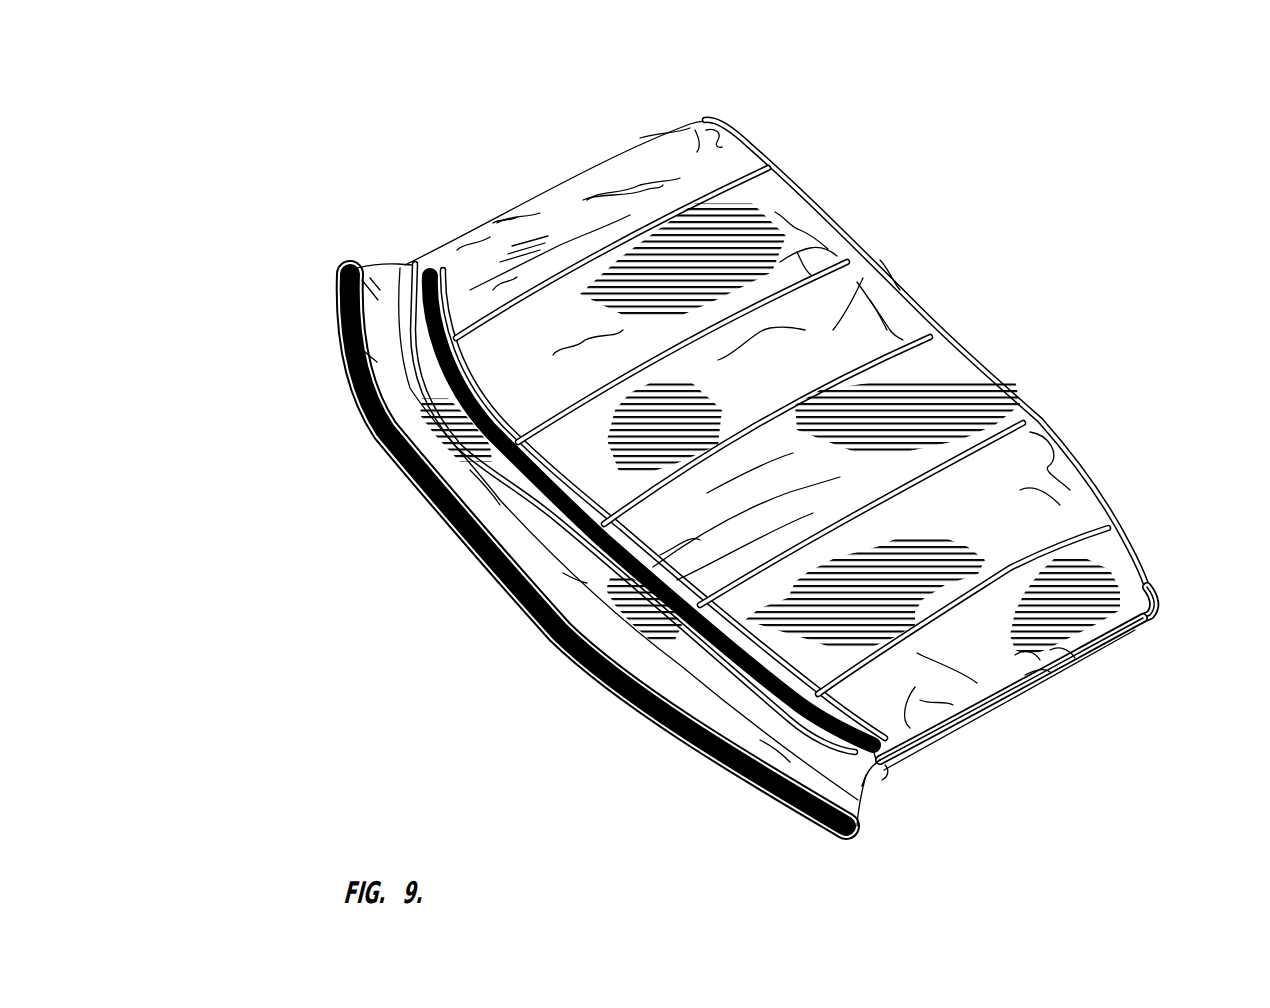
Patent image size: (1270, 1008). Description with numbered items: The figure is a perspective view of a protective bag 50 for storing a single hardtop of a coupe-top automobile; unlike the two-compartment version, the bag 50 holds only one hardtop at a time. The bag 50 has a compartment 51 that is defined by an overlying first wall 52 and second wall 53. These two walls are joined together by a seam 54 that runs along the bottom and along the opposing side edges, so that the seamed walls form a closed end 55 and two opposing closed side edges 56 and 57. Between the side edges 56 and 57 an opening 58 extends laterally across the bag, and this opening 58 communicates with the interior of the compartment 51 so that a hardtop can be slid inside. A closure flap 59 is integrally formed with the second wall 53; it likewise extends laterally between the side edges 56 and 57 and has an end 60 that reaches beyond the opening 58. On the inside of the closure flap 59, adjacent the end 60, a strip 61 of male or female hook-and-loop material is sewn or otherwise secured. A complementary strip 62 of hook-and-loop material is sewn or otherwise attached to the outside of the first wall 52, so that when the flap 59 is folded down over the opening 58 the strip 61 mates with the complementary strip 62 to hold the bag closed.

The protective bag 50 is at (1090, 238).
The compartment 51 is at (717, 168).
The first wall 52 is at (1074, 510).
The second wall 53 is at (1122, 630).
The seam 54 is at (1043, 668).
The closed end 55 is at (898, 286).
The closed side edge 56 is at (978, 716).
The closed side edge 57 is at (546, 194).
The opening 58 is at (520, 486).
The closure flap 59 is at (378, 298).
The end 60 is at (536, 624).
The strip 61 is at (338, 314).
The complementary strip 62 is at (433, 283).